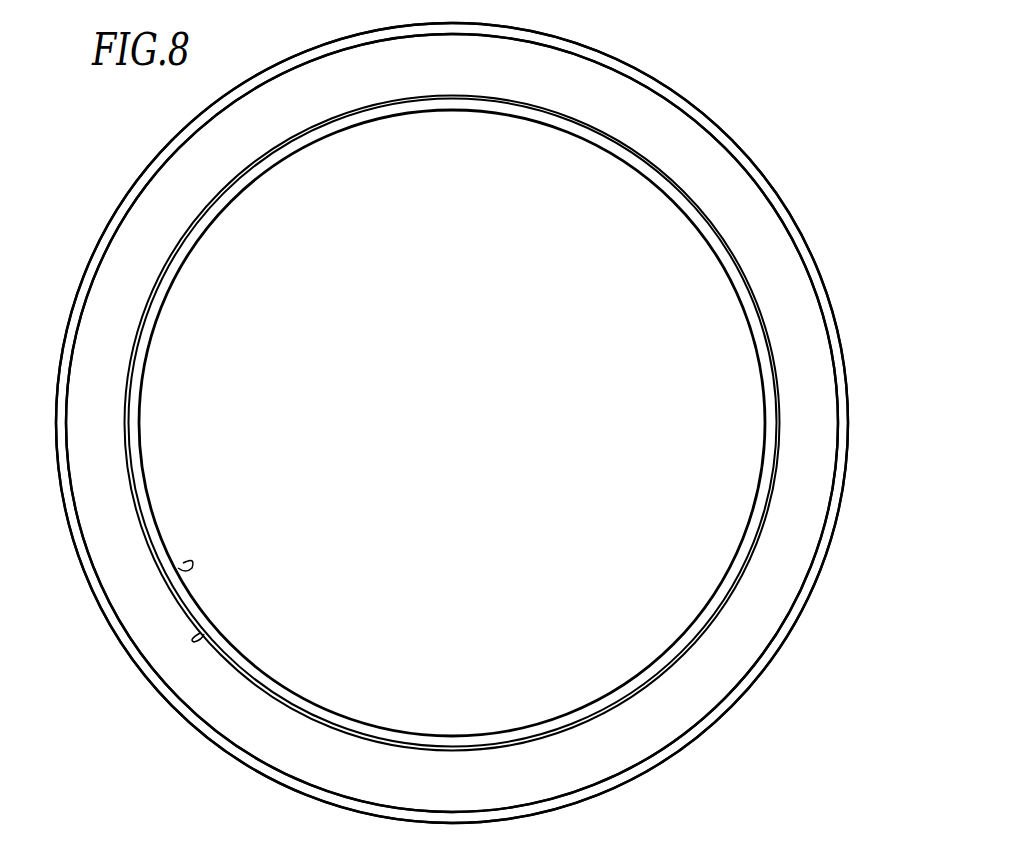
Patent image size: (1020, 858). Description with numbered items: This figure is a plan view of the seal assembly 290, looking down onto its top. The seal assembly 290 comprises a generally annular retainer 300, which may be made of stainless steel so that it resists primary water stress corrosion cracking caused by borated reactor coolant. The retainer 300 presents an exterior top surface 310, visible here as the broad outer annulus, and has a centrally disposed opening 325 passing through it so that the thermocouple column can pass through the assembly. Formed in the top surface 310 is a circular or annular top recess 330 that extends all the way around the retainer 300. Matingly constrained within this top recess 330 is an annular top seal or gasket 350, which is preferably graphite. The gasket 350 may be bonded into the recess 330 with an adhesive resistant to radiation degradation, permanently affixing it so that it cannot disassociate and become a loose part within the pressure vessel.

The seal assembly 290 is at (737, 109).
The retainer 300 is at (171, 697).
The exterior top surface 310 is at (247, 755).
The top seal or gasket 350 is at (221, 718).
The centrally disposed opening 325 is at (183, 563).
The top recess 330 is at (200, 634).